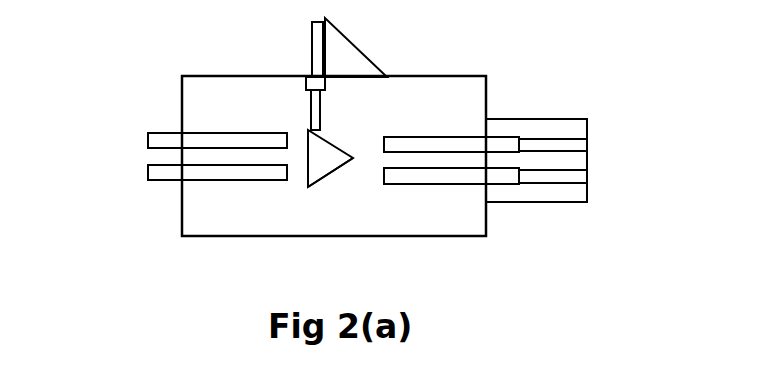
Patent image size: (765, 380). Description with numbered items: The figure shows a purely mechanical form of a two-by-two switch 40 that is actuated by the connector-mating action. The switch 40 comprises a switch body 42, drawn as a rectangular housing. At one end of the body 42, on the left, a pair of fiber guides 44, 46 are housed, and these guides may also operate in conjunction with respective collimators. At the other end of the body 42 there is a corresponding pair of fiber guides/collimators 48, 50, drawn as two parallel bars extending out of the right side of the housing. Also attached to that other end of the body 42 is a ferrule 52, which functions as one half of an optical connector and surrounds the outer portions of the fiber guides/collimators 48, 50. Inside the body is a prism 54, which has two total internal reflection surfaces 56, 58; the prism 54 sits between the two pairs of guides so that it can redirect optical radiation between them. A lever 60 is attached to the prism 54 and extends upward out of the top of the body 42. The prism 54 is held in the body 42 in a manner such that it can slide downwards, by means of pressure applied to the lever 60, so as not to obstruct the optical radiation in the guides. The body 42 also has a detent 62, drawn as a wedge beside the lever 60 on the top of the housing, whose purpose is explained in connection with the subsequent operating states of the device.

The 2×2 switch 40 is at (138, 55).
The switch body 42 is at (215, 225).
The fiber guide 44 is at (168, 133).
The fiber guide 46 is at (168, 182).
The fiber guide/collimator 48 is at (453, 133).
The fiber guide/collimator 50 is at (453, 185).
The ferrule 52 is at (573, 119).
The prism 54 is at (323, 178).
The total internal reflection surface 56 is at (332, 133).
The total internal reflection surface 58 is at (327, 178).
The lever 60 is at (309, 45).
The detent 62 is at (353, 49).